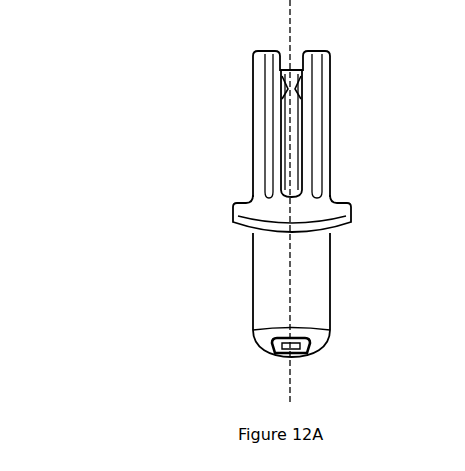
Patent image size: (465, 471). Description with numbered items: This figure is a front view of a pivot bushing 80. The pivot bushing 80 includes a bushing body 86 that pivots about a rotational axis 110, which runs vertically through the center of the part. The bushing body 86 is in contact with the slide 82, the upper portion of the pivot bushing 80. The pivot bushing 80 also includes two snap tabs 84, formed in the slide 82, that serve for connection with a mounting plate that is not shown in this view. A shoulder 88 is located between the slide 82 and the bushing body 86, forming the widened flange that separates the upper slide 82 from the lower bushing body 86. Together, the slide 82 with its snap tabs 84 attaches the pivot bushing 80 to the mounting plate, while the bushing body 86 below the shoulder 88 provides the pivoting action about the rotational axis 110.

The pivot bushing 80 is at (188, 65).
The slide 82 is at (338, 52).
The snap tabs 84 is at (293, 101).
The bushing body 86 is at (246, 276).
The shoulder 88 is at (338, 208).
The rotational axis 110 is at (277, 368).